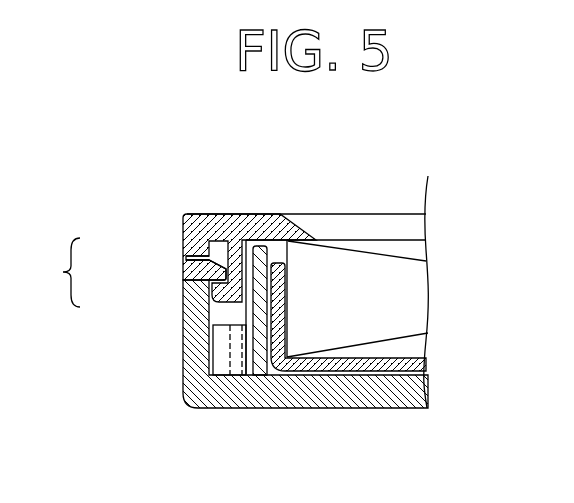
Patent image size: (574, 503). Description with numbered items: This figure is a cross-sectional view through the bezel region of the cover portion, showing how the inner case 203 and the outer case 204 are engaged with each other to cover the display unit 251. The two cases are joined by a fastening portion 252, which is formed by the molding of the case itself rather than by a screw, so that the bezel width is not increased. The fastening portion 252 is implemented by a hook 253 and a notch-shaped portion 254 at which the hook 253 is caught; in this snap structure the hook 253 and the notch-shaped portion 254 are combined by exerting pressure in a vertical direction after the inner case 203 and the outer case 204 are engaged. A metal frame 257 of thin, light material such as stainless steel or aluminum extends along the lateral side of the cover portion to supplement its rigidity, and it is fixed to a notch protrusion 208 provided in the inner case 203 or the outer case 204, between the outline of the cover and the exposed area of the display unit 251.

The inner case 203 is at (198, 227).
The outer case 204 is at (195, 388).
The notch protrusion 208 is at (228, 315).
The display unit 251 is at (408, 297).
The fastening portion 252 is at (56, 272).
The hook 253 is at (210, 256).
The notch-shaped portion 254 is at (213, 268).
The metal frame 257 is at (260, 360).